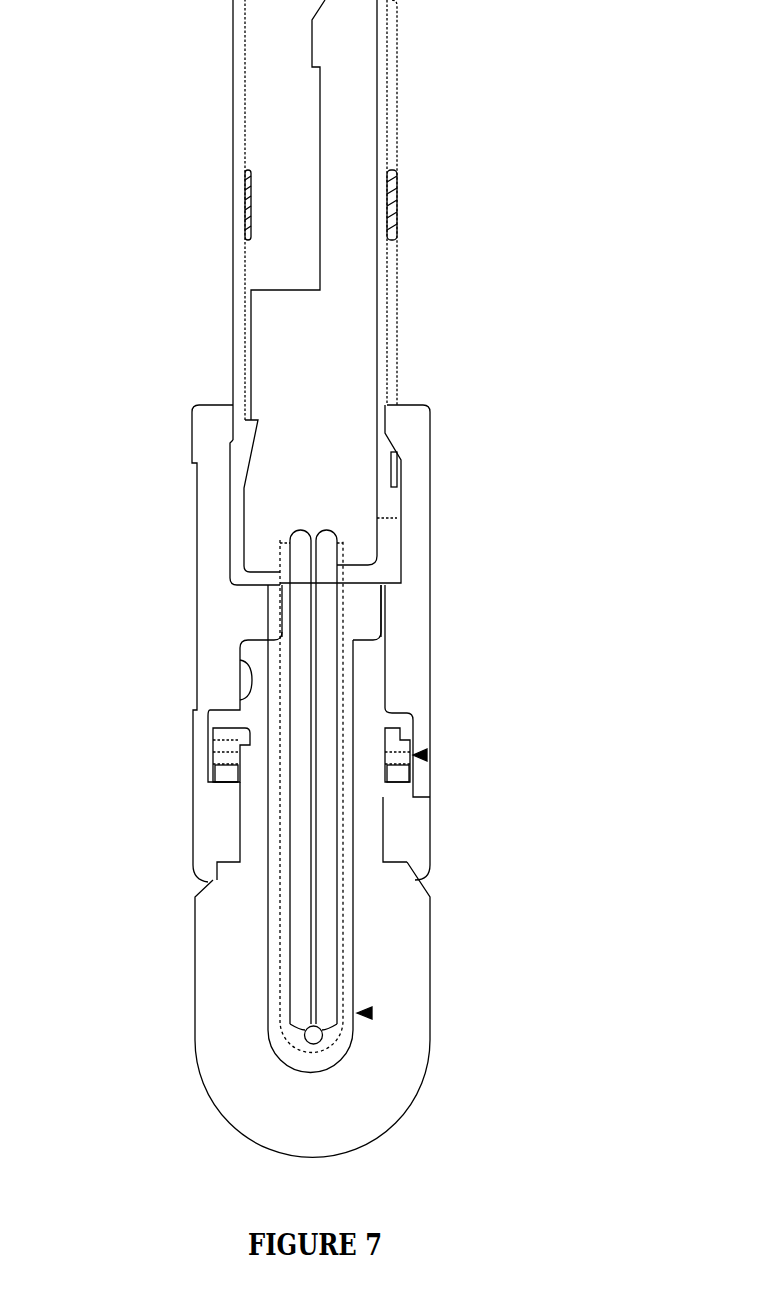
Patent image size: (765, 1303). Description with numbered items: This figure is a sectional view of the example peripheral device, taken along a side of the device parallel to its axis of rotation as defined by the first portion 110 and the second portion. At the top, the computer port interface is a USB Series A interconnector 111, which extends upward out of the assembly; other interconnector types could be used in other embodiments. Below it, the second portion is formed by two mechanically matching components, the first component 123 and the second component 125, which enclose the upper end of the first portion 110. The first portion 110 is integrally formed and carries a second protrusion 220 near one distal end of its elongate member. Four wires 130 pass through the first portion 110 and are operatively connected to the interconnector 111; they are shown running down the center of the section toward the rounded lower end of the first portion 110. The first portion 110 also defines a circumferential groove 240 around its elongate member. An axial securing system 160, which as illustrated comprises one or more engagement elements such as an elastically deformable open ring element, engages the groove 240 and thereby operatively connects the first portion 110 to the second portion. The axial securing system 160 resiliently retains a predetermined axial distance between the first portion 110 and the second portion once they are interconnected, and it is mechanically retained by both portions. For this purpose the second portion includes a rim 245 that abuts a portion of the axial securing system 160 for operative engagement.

The first portion 110 is at (230, 1043).
The USB Series A interconnector 111 is at (400, 128).
The first component 123 is at (227, 617).
The second component 125 is at (420, 518).
The wires 130 is at (372, 1013).
The axial securing system 160 is at (427, 755).
The second protrusion 220 is at (372, 608).
The groove 240 is at (243, 732).
The rim 245 is at (227, 782).